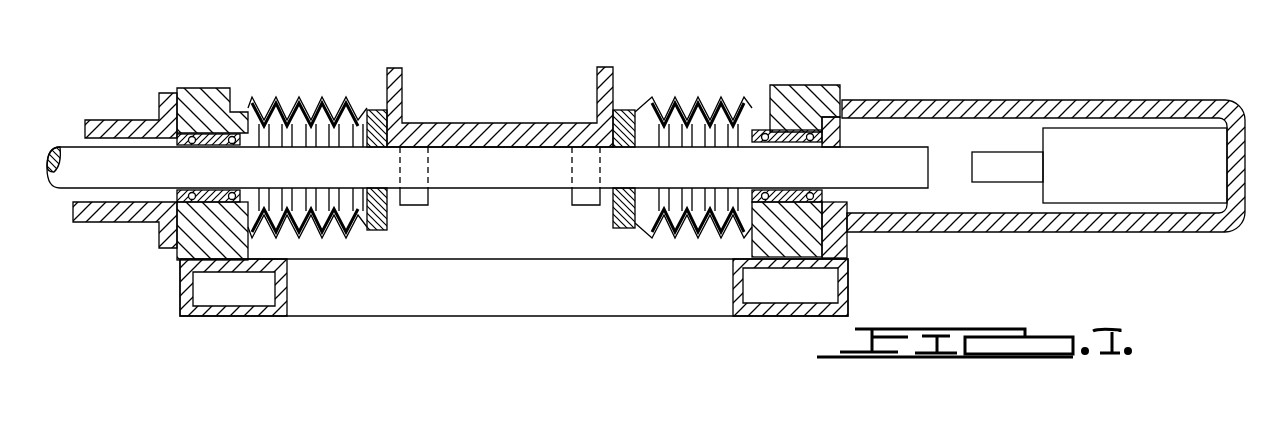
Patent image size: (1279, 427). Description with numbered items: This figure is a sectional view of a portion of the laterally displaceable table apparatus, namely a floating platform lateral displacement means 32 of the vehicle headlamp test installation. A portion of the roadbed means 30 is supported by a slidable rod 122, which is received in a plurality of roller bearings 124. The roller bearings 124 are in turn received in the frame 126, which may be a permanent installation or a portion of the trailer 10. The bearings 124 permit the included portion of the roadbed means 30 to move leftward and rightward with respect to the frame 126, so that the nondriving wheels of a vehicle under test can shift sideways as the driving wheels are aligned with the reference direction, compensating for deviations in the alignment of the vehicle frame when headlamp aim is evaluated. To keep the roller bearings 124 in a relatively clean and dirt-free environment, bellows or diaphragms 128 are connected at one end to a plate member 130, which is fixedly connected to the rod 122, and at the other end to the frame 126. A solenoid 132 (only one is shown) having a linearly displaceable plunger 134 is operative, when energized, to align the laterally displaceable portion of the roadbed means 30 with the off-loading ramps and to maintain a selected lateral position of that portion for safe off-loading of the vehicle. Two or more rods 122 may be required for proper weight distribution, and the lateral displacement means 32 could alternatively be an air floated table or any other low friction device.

The trailer 10 is at (127, 290).
The roadbed means 30 is at (488, 123).
The floating platform lateral displacement means 32 is at (1145, 87).
The rod 122 is at (72, 150).
The roller bearings 124 is at (180, 208).
The frame 126 is at (232, 92).
The bellows or diaphragms 128 is at (292, 100).
The plate member 130 is at (412, 207).
The solenoids 132 is at (1178, 130).
The linearly displaceable plungers 134 is at (985, 155).